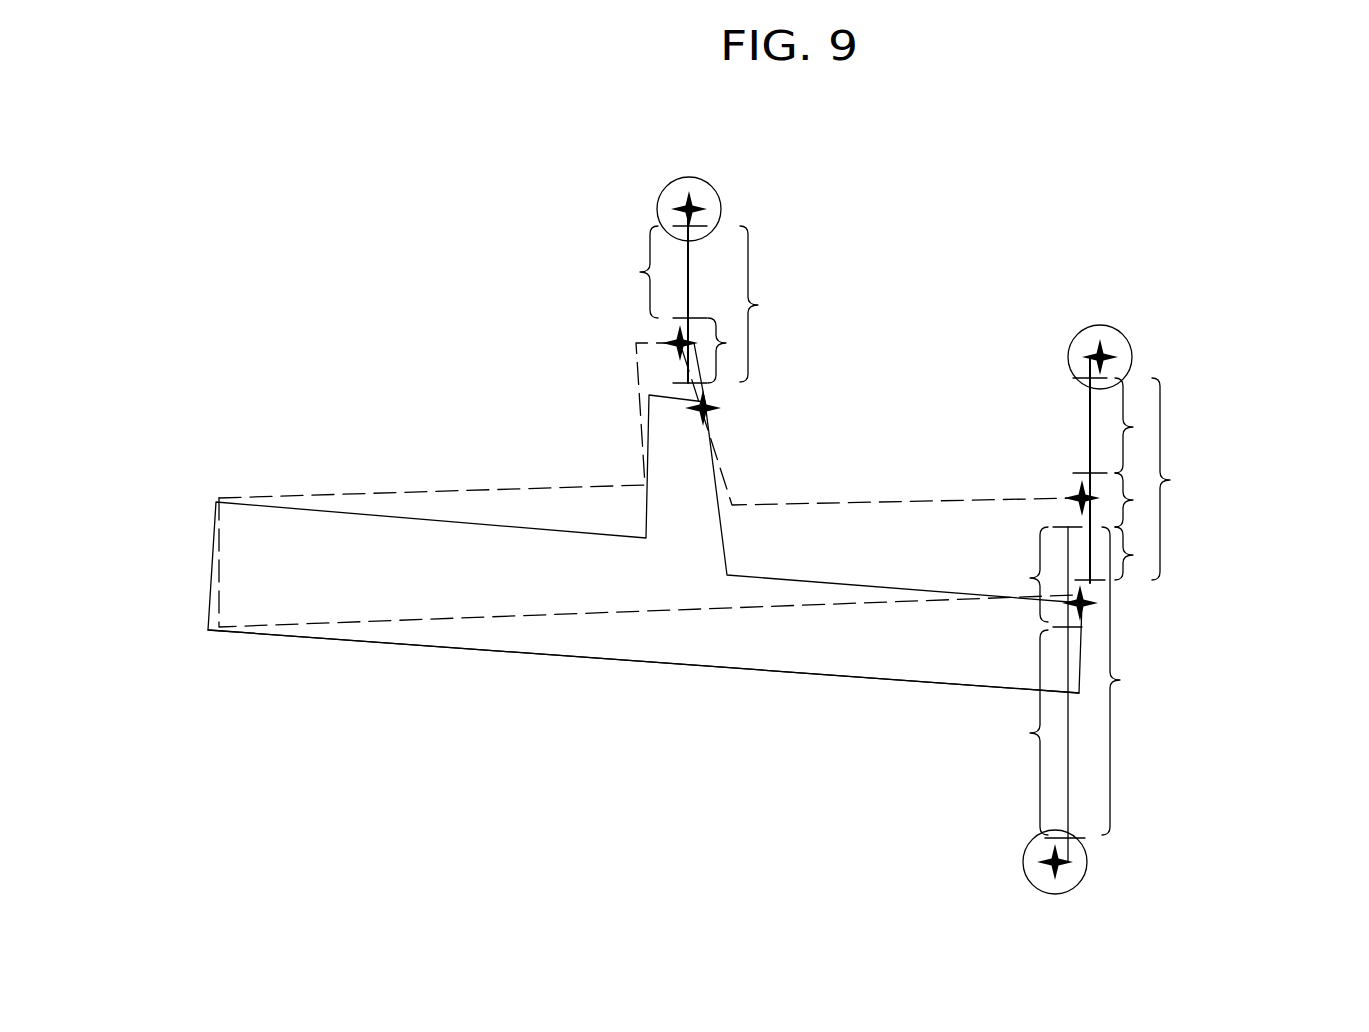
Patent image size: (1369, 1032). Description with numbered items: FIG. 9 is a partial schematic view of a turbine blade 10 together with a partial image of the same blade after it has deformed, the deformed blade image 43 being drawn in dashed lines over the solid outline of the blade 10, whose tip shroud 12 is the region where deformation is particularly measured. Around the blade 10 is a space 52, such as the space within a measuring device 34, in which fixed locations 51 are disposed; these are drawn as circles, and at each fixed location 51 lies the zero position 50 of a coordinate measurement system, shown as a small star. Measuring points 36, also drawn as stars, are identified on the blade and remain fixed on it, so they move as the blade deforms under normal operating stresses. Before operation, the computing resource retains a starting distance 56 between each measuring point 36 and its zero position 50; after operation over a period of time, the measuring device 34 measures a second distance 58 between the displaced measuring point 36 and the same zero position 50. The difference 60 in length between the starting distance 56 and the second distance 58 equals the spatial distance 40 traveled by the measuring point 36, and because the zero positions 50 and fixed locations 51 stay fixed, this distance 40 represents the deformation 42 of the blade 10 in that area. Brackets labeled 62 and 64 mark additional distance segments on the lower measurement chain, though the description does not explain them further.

The turbine blade 10 is at (393, 647).
The tip shroud 12 is at (588, 647).
The deformed blade image 43 is at (488, 508).
The measuring device 34 is at (1270, 198).
The measuring point 36 is at (672, 340).
The spatial distance 40 is at (719, 352).
The deformation 42 is at (717, 382).
The zero position 50 is at (703, 205).
The fixed location 51 is at (700, 180).
The space 52 is at (1160, 188).
The starting distance 56 is at (756, 277).
The second distance 58 is at (648, 243).
The difference 60 is at (722, 335).
The distance 62 is at (1035, 578).
The distance 64 is at (1038, 622).